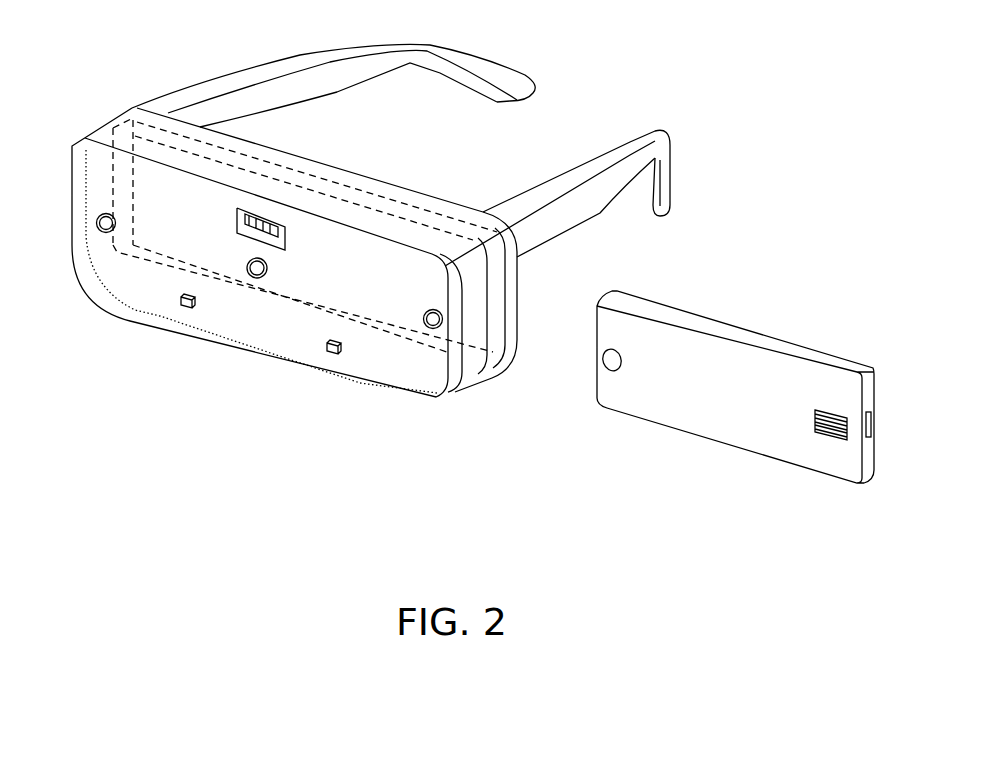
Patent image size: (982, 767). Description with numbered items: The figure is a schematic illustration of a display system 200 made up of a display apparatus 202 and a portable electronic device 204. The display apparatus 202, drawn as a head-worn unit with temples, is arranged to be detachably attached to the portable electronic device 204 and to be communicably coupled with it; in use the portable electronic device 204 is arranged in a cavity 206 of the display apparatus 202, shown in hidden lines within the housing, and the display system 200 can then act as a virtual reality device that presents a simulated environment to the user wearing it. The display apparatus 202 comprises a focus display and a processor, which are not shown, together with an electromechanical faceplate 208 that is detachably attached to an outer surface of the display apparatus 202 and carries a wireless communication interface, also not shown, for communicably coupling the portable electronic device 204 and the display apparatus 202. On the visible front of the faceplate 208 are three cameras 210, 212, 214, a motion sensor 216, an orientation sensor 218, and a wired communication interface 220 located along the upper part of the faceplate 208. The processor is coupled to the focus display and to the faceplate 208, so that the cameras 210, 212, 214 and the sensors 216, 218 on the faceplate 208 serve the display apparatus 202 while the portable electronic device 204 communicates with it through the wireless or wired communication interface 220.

The display system 200 is at (454, 255).
The display apparatus 202 is at (352, 245).
The portable electronic device 204 is at (735, 373).
The cavity 206 is at (438, 195).
The electromechanical faceplate 208 is at (305, 235).
The camera 210 is at (75, 283).
The camera 212 is at (226, 327).
The camera 214 is at (401, 378).
The motion sensor 216 is at (167, 342).
The orientation sensor 218 is at (315, 388).
The wired communication interface 220 is at (293, 187).